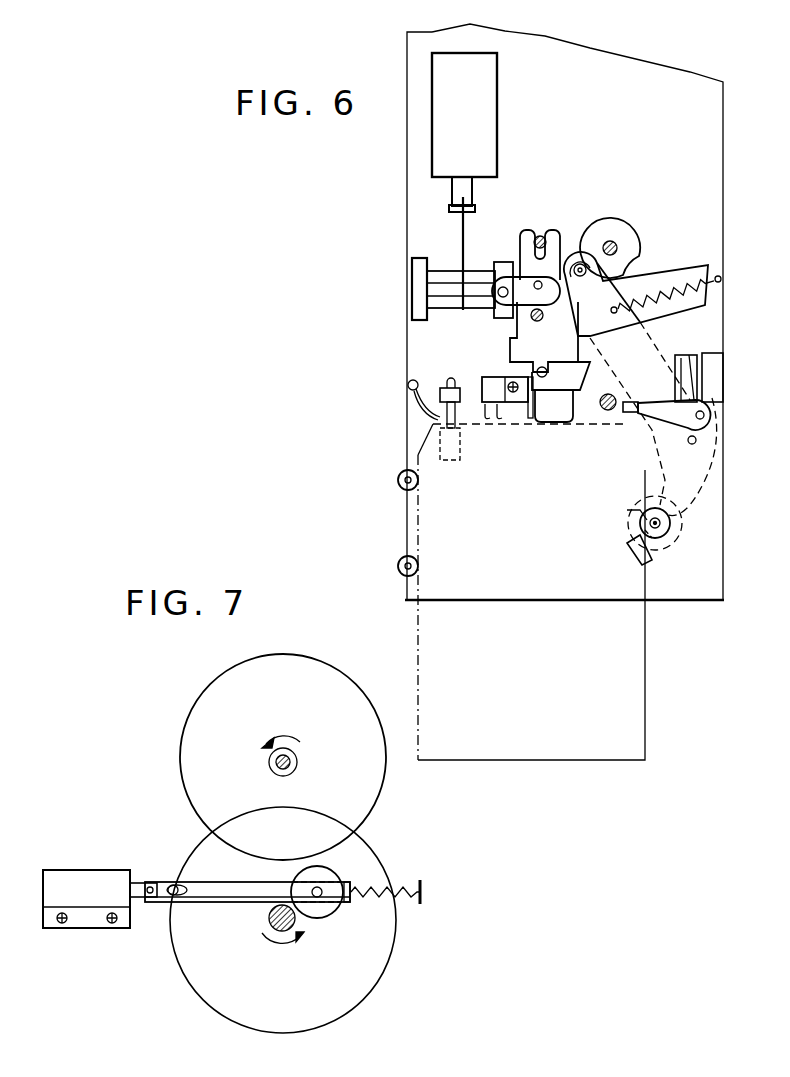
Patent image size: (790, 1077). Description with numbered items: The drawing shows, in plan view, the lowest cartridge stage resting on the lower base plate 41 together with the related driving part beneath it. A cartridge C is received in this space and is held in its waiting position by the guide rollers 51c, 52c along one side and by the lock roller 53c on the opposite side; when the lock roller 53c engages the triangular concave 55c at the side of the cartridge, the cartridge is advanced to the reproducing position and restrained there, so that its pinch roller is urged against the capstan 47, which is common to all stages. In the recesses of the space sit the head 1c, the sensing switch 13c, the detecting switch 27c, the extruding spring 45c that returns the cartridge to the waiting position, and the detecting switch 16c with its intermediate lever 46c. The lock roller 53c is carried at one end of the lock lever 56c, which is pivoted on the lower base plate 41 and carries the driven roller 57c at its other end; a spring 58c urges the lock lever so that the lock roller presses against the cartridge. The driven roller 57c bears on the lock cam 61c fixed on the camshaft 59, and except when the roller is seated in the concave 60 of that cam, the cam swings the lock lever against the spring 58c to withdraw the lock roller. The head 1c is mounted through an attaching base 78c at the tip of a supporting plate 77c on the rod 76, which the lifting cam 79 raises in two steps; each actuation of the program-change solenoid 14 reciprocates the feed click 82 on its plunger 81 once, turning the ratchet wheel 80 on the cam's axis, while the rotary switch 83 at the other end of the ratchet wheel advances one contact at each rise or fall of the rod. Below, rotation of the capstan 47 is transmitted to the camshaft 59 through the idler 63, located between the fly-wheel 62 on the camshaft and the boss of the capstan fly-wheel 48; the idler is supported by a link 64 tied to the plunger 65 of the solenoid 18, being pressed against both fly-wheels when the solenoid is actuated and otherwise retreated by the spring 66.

In FIG. 6, the program-change solenoid 14 is at (497, 97).
In FIG. 6, the plunger 81 is at (472, 192).
In FIG. 6, the feed click 82 is at (492, 240).
In FIG. 6, the ratchet wheel 80 is at (448, 283).
In FIG. 6, the rotary switch 83 is at (412, 266).
In FIG. 6, the lifting cam 79 is at (506, 262).
In FIG. 6, the driven roller 57c is at (528, 258).
In FIG. 6, the lock cam 61c is at (604, 240).
In FIG. 6, the camshaft 59 is at (617, 246).
In FIG. 7, the camshaft 59 is at (270, 756).
In FIG. 6, the concave 60 is at (654, 278).
In FIG. 6, the spring 58c is at (688, 285).
In FIG. 6, the detecting switch 16c is at (712, 350).
In FIG. 6, the rod 76 is at (532, 318).
In FIG. 6, the supporting plate 77c is at (510, 348).
In FIG. 6, the head 1c is at (556, 402).
In FIG. 6, the attaching base 78c is at (580, 410).
In FIG. 6, the sensing switch 13c is at (495, 422).
In FIG. 6, the detecting switch 27c is at (455, 410).
In FIG. 6, the extruding spring 45c is at (420, 412).
In FIG. 6, the guide roller 52c is at (396, 466).
In FIG. 6, the guide roller 51c is at (398, 560).
In FIG. 6, the intermediate lever 46c is at (660, 400).
In FIG. 6, the capstan 47 is at (610, 410).
In FIG. 7, the capstan 47 is at (270, 910).
In FIG. 6, the lock roller 53c is at (640, 518).
In FIG. 6, the lock lever 56c is at (640, 503).
In FIG. 6, the triangular concave 55c is at (663, 560).
In FIG. 6, the lower base plate 41 is at (665, 600).
In FIG. 6, the cartridge C is at (638, 658).
In FIG. 7, the fly-wheel 62 is at (189, 730).
In FIG. 7, the fly-wheel 48 is at (195, 980).
In FIG. 7, the solenoid 18 is at (100, 870).
In FIG. 7, the plunger 65 is at (142, 883).
In FIG. 7, the link 64 is at (196, 902).
In FIG. 7, the idler 63 is at (326, 868).
In FIG. 7, the spring 66 is at (396, 880).